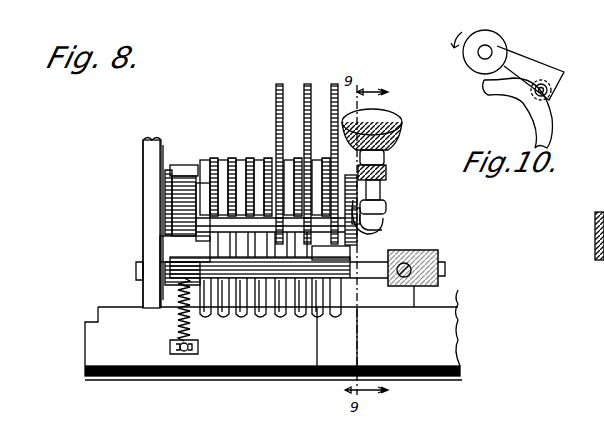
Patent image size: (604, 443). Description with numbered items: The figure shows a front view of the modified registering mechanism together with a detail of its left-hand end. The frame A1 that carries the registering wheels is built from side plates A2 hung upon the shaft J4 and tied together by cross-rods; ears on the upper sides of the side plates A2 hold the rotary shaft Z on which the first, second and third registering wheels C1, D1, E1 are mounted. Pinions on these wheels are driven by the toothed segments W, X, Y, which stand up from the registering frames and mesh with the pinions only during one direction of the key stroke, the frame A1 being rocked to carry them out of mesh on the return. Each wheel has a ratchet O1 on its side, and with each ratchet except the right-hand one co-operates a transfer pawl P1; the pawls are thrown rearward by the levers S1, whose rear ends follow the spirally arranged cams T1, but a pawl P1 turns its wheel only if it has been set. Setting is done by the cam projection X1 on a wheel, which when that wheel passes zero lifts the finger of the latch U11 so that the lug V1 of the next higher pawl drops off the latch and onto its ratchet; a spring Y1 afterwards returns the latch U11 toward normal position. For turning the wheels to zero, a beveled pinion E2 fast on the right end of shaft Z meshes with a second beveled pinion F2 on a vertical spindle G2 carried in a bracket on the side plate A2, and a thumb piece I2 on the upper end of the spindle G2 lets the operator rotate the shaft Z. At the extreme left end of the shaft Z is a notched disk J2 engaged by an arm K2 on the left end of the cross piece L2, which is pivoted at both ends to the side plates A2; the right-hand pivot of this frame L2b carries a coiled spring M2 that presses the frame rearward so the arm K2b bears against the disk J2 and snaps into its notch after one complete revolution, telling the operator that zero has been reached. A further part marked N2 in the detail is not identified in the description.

In FIG. 8, the notched disk J2 is at (164, 181).
In FIG. 10, the notched disk J2 is at (488, 36).
In FIG. 8, the arm K2 is at (172, 222).
In FIG. 10, the arm K2 is at (520, 60).
In FIG. 8, the side plates A2 is at (195, 232).
In FIG. 8, the cross piece or frame L2 is at (160, 250).
In FIG. 8, the ratchet O1 is at (220, 162).
In FIG. 8, the third registering wheel E1 is at (258, 164).
In FIG. 8, the second registering wheel D1 is at (289, 162).
In FIG. 8, the first registering wheel C1 is at (318, 162).
In FIG. 8, the toothed segment Y is at (277, 154).
In FIG. 8, the toothed segment X is at (305, 154).
In FIG. 8, the toothed segment W is at (334, 152).
In FIG. 8, the shaft Z is at (349, 198).
In FIG. 10, the shaft Z is at (485, 52).
In FIG. 8, the transfer pawl P1 is at (216, 314).
In FIG. 8, the lever S1 is at (330, 312).
In FIG. 8, the latch U11 is at (260, 260).
In FIG. 8, the cam projection X1 is at (275, 238).
In FIG. 8, the spring Y1 is at (259, 244).
In FIG. 8, the cam T1 is at (292, 243).
In FIG. 8, the lug V1 is at (360, 217).
In FIG. 8, the cross piece or frame L2b is at (331, 253).
In FIG. 8, the shaft J4 is at (376, 283).
In FIG. 8, the frame A1 is at (336, 285).
In FIG. 8, the thumb piece I2 is at (388, 123).
In FIG. 8, the vertical spindle G2 is at (384, 155).
In FIG. 8, the beveled pinion F2 is at (386, 172).
In FIG. 8, the beveled pinion E2 is at (380, 190).
In FIG. 8, the arm K2b is at (386, 218).
In FIG. 8, the spring M2 is at (360, 228).
In FIG. 10, the hook N2 is at (540, 114).